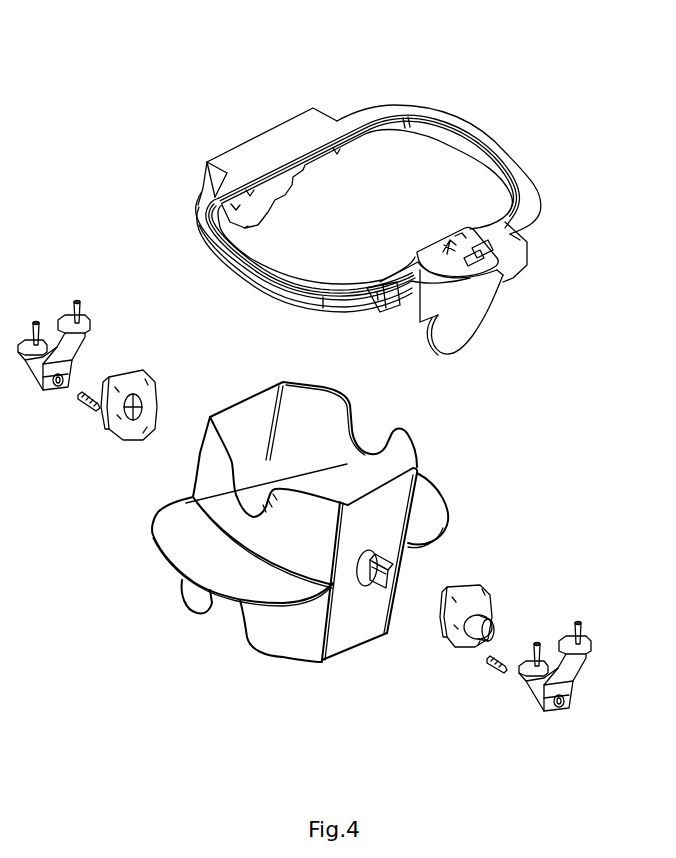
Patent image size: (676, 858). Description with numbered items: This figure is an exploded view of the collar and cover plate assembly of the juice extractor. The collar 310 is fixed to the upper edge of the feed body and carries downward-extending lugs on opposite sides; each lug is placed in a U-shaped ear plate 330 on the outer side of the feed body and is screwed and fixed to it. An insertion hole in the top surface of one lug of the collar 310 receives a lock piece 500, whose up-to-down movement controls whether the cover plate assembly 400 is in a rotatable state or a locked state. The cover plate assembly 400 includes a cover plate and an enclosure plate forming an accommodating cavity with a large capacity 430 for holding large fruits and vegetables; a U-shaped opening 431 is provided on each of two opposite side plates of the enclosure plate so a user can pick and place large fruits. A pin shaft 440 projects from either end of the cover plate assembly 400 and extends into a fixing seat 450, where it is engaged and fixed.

The collar 310 is at (455, 128).
The lock piece 500 is at (495, 268).
The cover plate assembly 400 is at (241, 567).
The accommodating cavity with a large capacity 430 is at (330, 468).
The U-shaped opening 431 is at (249, 491).
The pin shaft 440 is at (333, 580).
The fixing seat 450 is at (448, 640).
The U-shaped ear plate 330 is at (533, 702).